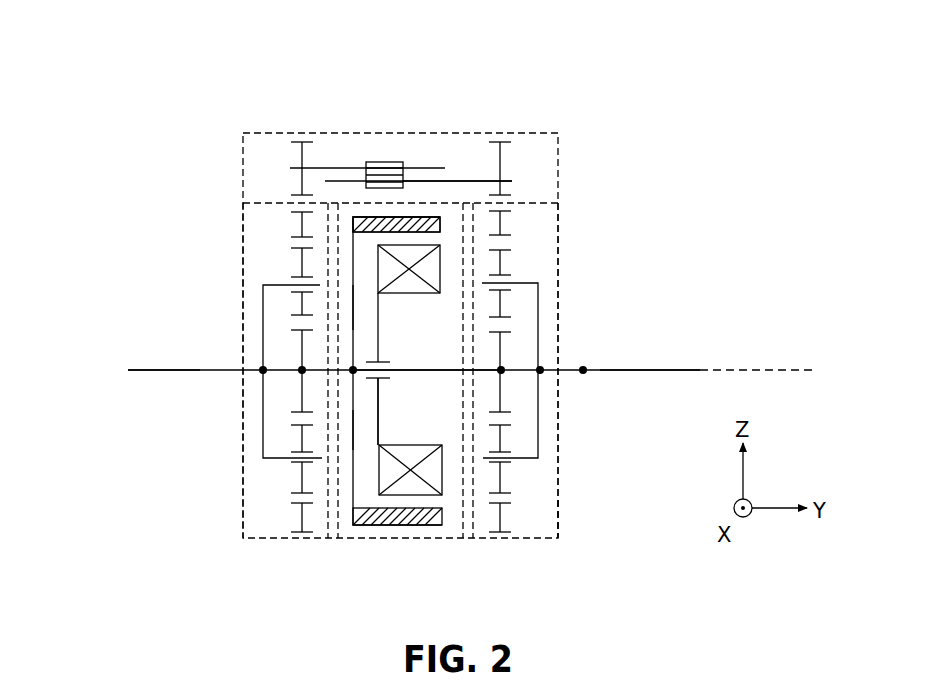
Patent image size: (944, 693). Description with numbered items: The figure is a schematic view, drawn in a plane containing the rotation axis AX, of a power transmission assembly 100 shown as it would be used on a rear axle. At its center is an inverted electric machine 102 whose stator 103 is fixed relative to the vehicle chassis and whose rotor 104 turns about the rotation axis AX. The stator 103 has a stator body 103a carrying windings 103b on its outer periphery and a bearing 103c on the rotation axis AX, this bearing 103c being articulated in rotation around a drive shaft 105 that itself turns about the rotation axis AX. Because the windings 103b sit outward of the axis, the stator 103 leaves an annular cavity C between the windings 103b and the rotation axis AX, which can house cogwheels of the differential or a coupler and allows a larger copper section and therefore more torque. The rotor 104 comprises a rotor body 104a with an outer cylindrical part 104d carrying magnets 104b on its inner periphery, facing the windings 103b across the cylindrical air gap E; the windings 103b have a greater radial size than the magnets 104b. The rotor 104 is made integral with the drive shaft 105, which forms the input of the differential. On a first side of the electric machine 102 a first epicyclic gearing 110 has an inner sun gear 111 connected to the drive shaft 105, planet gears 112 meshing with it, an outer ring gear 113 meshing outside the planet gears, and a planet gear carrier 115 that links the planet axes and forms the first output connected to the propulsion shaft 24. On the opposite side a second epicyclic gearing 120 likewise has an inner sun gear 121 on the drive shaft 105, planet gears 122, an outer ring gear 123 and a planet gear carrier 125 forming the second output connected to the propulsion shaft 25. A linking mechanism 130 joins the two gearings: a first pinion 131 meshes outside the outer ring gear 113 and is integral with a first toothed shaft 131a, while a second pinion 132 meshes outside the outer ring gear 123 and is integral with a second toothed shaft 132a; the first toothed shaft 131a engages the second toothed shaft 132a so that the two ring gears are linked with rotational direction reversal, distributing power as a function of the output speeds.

The power transmission assembly 100 is at (602, 547).
The electric machine 102 is at (407, 545).
The stator 103 is at (380, 400).
The stator body 103a is at (379, 420).
The windings 103b is at (440, 257).
The bearing 103c is at (381, 362).
The rotor 104 is at (433, 215).
The rotor body 104a is at (355, 308).
The magnets 104b is at (390, 230).
The outer cylindrical part 104d is at (352, 430).
The drive shaft 105 is at (417, 372).
The first epicyclic gearing 110 is at (265, 548).
The inner sun gear 111 is at (300, 388).
The planet gears 112 is at (300, 265).
The outer ring gear 113 is at (300, 227).
The planet gear carrier 115 is at (263, 338).
The second epicyclic gearing 120 is at (518, 548).
The inner sun gear 121 is at (502, 352).
The planet gears 122 is at (502, 493).
The outer ring gear 123 is at (502, 528).
The planet gear carrier 125 is at (540, 312).
The linking mechanism 130 is at (272, 122).
The first pinion 131 is at (302, 160).
The first toothed shaft 131a is at (392, 162).
The second pinion 132 is at (502, 162).
The second toothed shaft 132a is at (407, 175).
The propulsion shaft 24 is at (140, 370).
The propulsion shaft 25 is at (676, 370).
The rotation axis AX is at (762, 365).
The air gap E is at (443, 233).
The annular cavity C is at (405, 425).